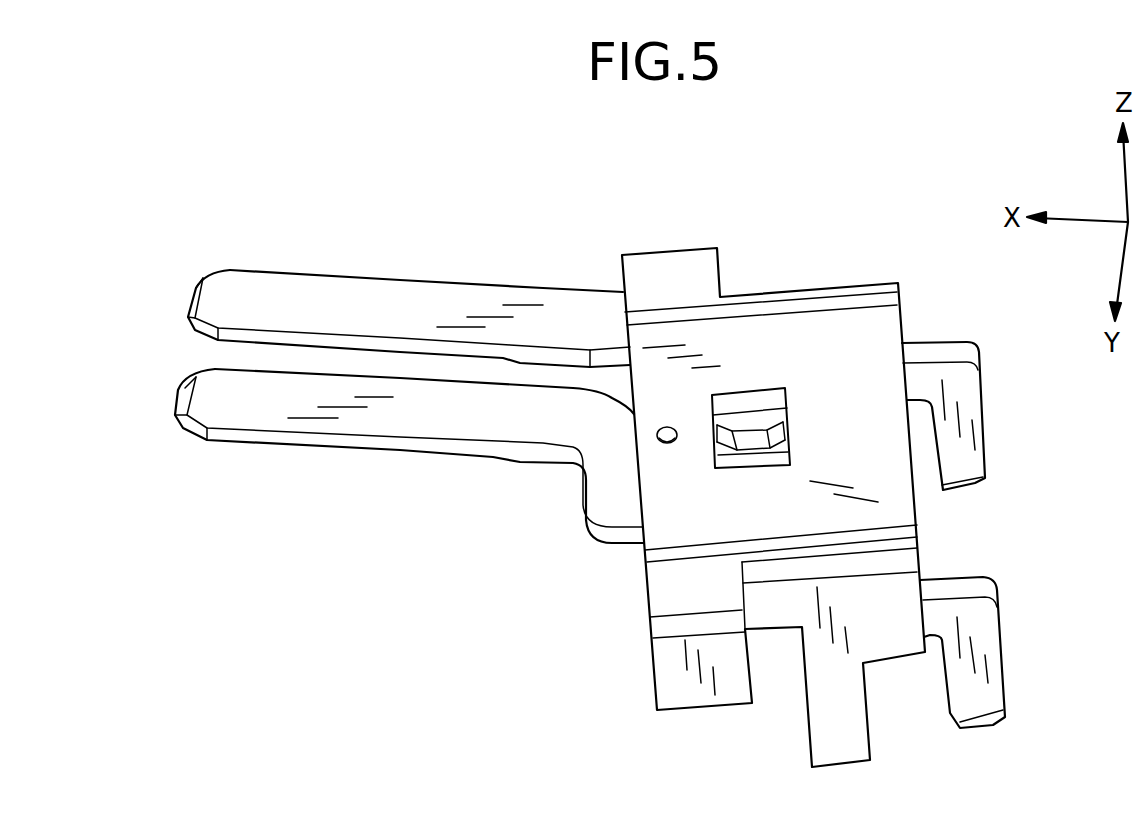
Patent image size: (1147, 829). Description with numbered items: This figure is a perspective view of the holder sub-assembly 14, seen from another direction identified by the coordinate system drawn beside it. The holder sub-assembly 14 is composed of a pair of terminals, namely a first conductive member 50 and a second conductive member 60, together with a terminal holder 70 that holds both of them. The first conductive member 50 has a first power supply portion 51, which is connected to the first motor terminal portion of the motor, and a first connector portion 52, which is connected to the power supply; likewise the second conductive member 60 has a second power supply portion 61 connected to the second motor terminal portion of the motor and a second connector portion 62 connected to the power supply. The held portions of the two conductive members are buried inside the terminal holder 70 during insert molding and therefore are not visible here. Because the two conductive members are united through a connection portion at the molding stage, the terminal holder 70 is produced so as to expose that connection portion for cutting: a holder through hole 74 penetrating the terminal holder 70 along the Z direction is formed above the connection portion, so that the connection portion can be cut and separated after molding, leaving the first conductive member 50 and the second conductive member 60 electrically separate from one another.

The holder sub-assembly 14 is at (339, 191).
The first conductive member 50 is at (525, 476).
The first power supply portion 51 is at (970, 708).
The first connector portion 52 is at (263, 408).
The second conductive member 60 is at (549, 275).
The second power supply portion 61 is at (957, 473).
The second connector portion 62 is at (270, 291).
The terminal holder 70 is at (813, 277).
The holder through hole 74 is at (744, 405).